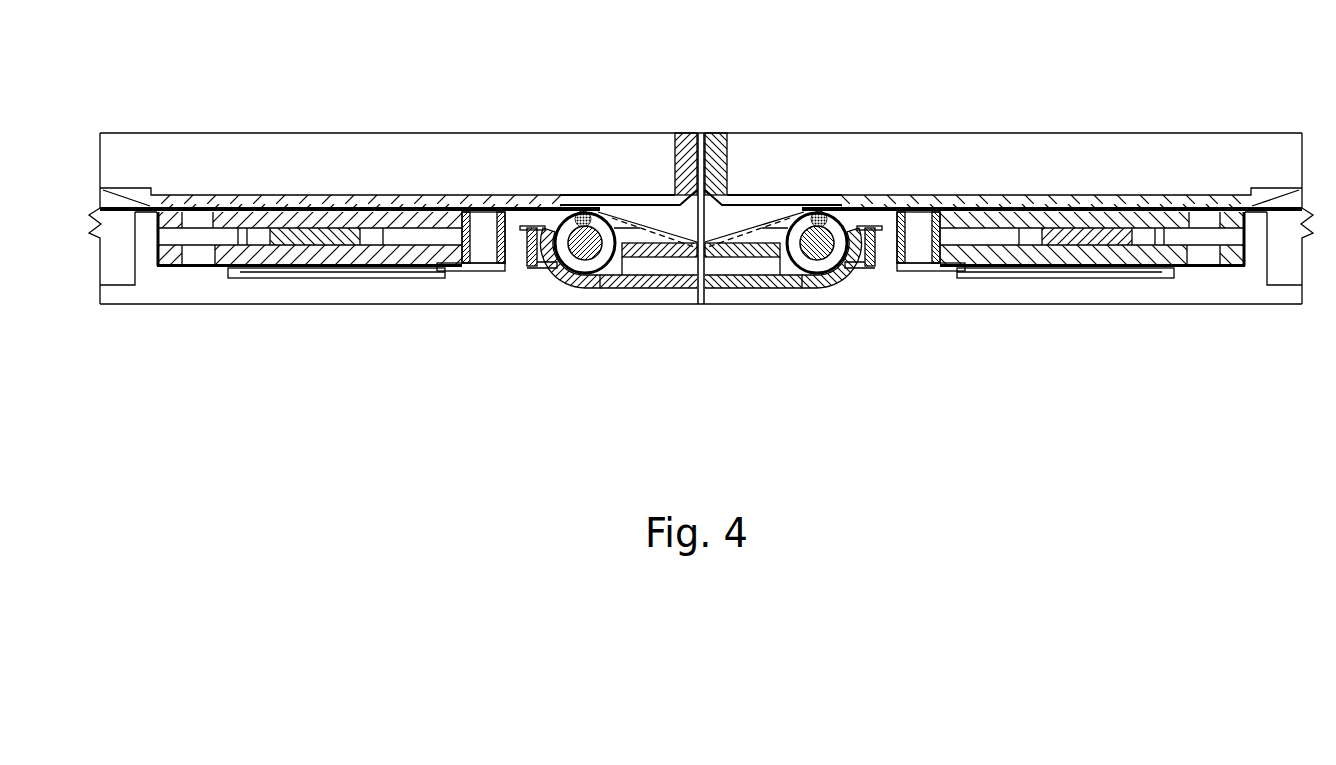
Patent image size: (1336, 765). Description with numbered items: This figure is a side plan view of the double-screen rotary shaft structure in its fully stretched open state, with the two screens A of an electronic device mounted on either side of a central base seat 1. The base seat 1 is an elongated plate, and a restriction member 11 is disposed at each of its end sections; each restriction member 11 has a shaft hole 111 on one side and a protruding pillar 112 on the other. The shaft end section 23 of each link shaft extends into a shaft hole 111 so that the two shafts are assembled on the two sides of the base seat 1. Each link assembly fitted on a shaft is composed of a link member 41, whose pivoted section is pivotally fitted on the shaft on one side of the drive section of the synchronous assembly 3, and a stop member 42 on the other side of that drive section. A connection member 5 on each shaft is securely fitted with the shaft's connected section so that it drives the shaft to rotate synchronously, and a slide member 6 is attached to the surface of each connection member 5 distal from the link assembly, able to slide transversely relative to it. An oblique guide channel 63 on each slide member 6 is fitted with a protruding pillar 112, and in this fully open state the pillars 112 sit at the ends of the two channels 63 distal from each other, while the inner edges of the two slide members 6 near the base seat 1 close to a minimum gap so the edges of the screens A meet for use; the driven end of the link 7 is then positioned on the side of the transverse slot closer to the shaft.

The screen A is at (375, 160).
The base seat 1 is at (652, 283).
The restriction member 11 is at (733, 262).
The shaft hole 111 is at (580, 280).
The protruding pillar 112 is at (583, 211).
The shaft end section 23 is at (692, 287).
The synchronous assembly 3 is at (681, 262).
The link member 41 is at (400, 262).
The stop member 42 is at (520, 266).
The connection member 5 is at (268, 262).
The slide member 6 is at (440, 276).
The oblique guide channel 63 is at (637, 212).
The link 7 is at (330, 272).